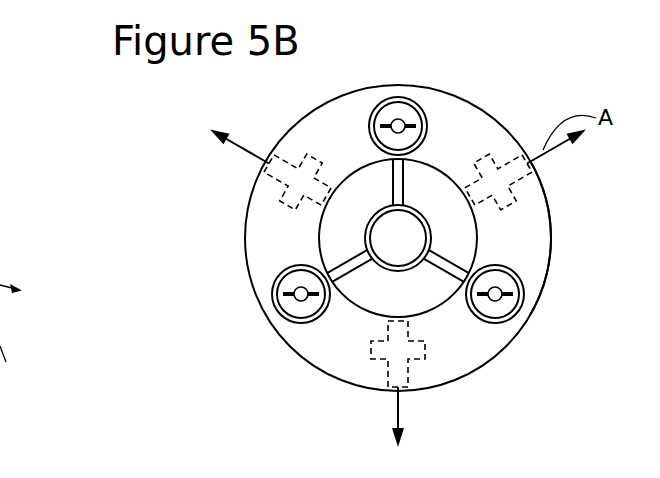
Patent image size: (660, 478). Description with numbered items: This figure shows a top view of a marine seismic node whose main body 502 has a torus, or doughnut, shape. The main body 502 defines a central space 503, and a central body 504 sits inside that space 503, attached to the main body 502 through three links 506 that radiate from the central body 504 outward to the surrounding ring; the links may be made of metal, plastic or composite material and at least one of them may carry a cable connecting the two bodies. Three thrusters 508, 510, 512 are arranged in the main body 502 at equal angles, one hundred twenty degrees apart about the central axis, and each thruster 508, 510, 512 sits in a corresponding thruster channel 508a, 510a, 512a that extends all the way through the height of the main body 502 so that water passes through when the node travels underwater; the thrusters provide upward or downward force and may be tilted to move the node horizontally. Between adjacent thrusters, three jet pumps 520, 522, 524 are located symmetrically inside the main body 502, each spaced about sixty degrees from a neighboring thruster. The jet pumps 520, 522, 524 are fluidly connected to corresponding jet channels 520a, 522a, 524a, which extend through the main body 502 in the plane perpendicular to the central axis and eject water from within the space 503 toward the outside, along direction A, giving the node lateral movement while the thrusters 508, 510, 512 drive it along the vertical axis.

The main body 502 is at (470, 128).
The space 503 is at (345, 228).
The central body 504 is at (405, 227).
The link 506 is at (550, 222).
The thruster 508 is at (392, 121).
The thruster channel 508a is at (405, 112).
The thruster 510 is at (508, 284).
The thruster channel 510a is at (507, 305).
The thruster 512 is at (292, 290).
The thruster channel 512a is at (292, 310).
The jet pump 520 is at (508, 202).
The jet channel 520a is at (510, 157).
The jet pump 522 is at (425, 352).
The jet channel 522a is at (408, 372).
The jet pump 524 is at (318, 158).
The jet channel 524a is at (286, 160).